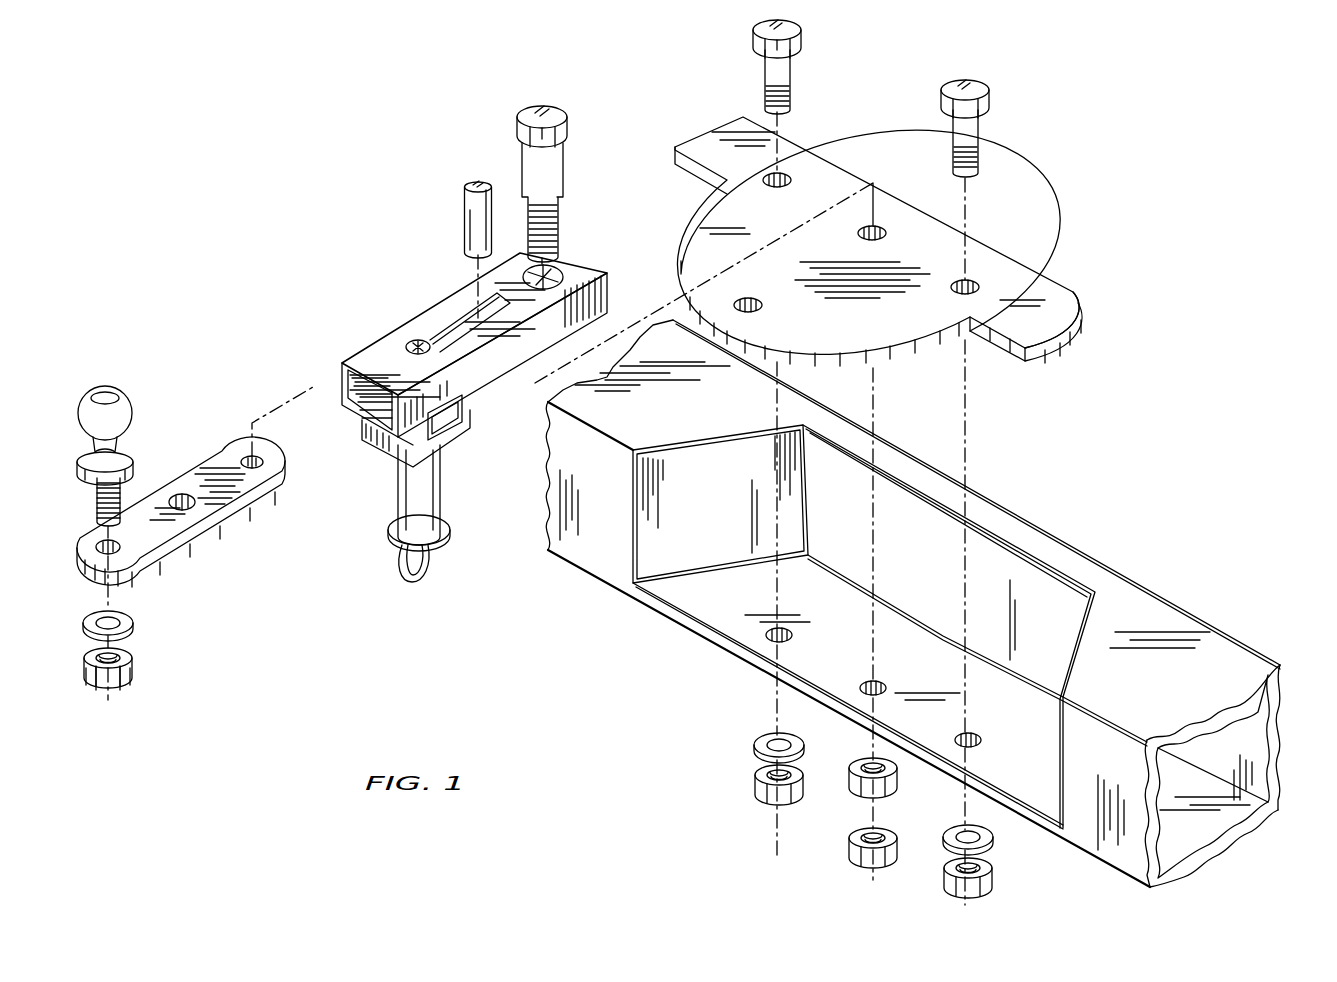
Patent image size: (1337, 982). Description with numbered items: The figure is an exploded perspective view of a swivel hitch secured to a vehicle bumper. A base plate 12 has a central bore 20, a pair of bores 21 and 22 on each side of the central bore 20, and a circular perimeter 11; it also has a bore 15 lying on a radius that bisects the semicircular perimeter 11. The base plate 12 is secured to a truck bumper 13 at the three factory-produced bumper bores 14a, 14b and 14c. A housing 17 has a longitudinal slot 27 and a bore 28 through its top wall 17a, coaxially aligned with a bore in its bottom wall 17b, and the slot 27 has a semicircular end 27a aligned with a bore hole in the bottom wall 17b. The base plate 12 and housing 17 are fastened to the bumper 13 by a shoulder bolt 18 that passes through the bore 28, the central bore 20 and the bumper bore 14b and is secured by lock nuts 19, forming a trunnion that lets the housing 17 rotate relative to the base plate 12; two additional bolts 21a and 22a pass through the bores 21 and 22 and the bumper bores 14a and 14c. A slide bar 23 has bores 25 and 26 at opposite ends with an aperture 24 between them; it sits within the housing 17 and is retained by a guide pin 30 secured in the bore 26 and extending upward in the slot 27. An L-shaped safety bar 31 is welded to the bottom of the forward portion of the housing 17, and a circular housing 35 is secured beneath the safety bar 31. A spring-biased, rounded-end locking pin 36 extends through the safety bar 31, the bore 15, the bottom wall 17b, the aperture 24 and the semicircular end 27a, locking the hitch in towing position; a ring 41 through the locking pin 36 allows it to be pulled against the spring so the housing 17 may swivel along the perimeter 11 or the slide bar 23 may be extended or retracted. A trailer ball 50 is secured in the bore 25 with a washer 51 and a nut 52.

The circular perimeter 11 is at (903, 352).
The base plate 12 is at (1060, 302).
The truck bumper 13 is at (1178, 620).
The bumper bore 14a is at (765, 630).
The bumper bore 14b is at (882, 684).
The bumper bore 14c is at (978, 736).
The bore 15 is at (755, 298).
The housing 17 is at (401, 318).
The top wall 17a is at (358, 357).
The bottom wall 17b is at (363, 437).
The shoulder bolt 18 is at (556, 103).
The lock nuts 19 is at (853, 853).
The central bore 20 is at (886, 229).
The bore 21 is at (977, 283).
The bolt 21a is at (991, 96).
The bore 22 is at (791, 178).
The bolt 22a is at (803, 36).
The slide bar 23 is at (227, 513).
The aperture 24 is at (183, 496).
The bore 25 is at (120, 543).
The bore 26 is at (246, 457).
The longitudinal slot 27 is at (467, 306).
The semicircular end 27a is at (408, 348).
The bore 28 is at (560, 272).
The guide pin 30 is at (463, 215).
The safety bar 31 is at (382, 447).
The circular housing 35 is at (433, 505).
The locking pin 36 is at (418, 342).
The ring 41 is at (432, 560).
The trailer ball 50 is at (132, 413).
The washer 51 is at (133, 623).
The nut 52 is at (133, 683).